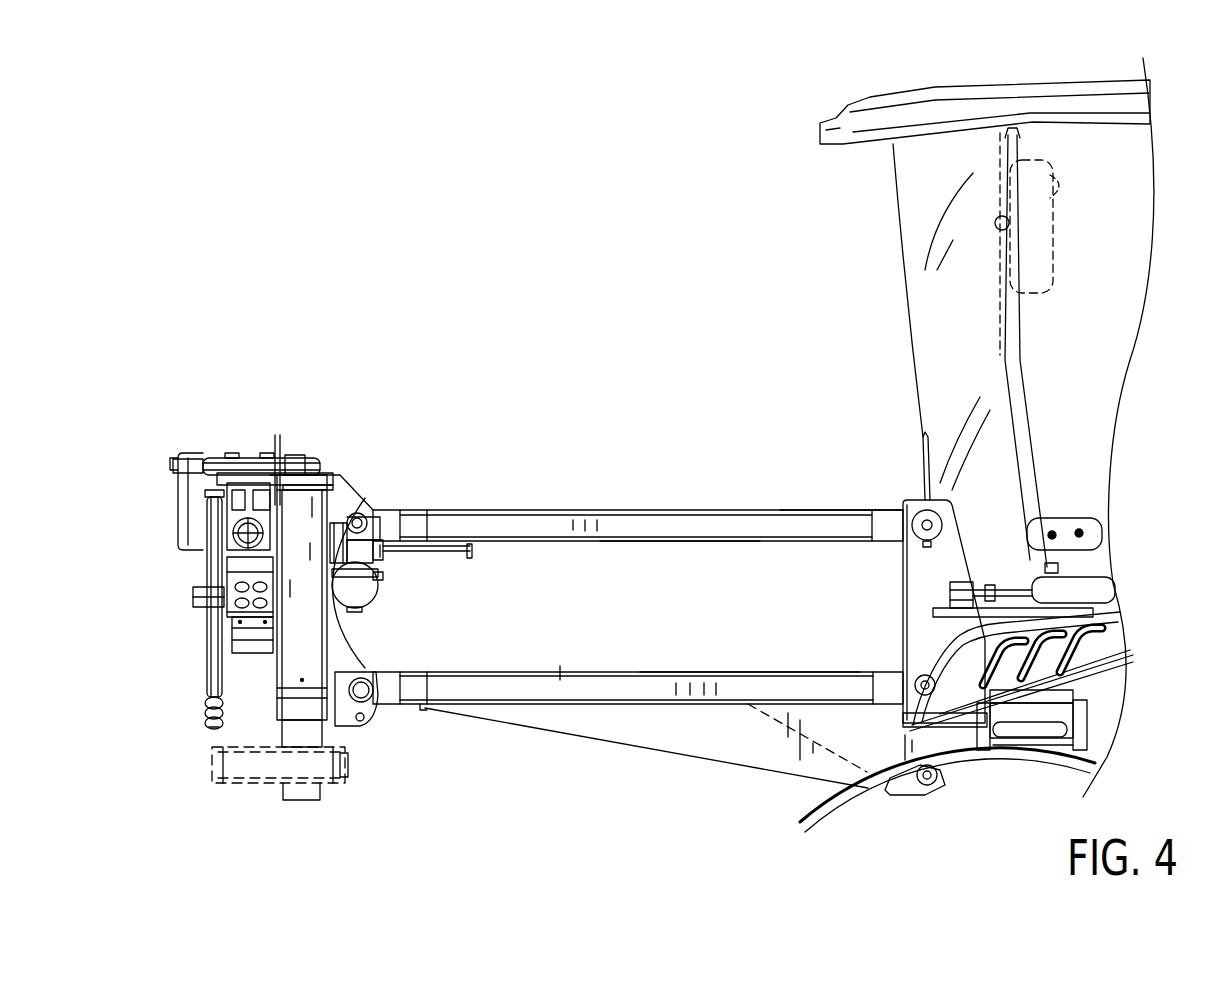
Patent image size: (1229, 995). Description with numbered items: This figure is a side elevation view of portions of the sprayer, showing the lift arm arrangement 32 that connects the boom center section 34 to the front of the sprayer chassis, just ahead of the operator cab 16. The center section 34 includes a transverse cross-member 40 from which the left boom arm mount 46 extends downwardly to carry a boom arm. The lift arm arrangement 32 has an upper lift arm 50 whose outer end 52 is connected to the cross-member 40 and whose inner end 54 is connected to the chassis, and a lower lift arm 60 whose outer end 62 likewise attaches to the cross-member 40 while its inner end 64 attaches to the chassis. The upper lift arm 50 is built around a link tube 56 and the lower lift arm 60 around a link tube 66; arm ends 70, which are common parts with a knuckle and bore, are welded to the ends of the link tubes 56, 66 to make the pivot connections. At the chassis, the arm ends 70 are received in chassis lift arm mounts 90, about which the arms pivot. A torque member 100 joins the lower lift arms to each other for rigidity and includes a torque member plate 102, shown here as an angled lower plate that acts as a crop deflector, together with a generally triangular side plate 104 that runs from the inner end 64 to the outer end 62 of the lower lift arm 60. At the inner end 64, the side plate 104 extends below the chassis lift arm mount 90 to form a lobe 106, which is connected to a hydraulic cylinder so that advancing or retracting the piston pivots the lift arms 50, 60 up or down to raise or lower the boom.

The operator cab 16 is at (875, 230).
The lift arm arrangement 32 is at (628, 368).
The boom center section 34 is at (302, 395).
The cross-member 40 is at (304, 446).
The left boom arm mount 46 is at (257, 673).
The upper lift arm 50 is at (690, 433).
The upper lift arm outer end 52 is at (432, 489).
The upper lift arm inner end 54 is at (841, 497).
The link tube 56 is at (688, 550).
The lower lift arm 60 is at (550, 664).
The lower lift arm outer end 62 is at (485, 664).
The lower lift arm inner end 64 is at (796, 667).
The link tube 66 is at (702, 667).
The arm end 70 is at (397, 550).
The chassis lift arm mount 90 is at (912, 607).
The torque member 100 is at (600, 770).
The torque member plate 102 is at (850, 766).
The side plate 104 is at (708, 752).
The lobe 106 is at (921, 793).